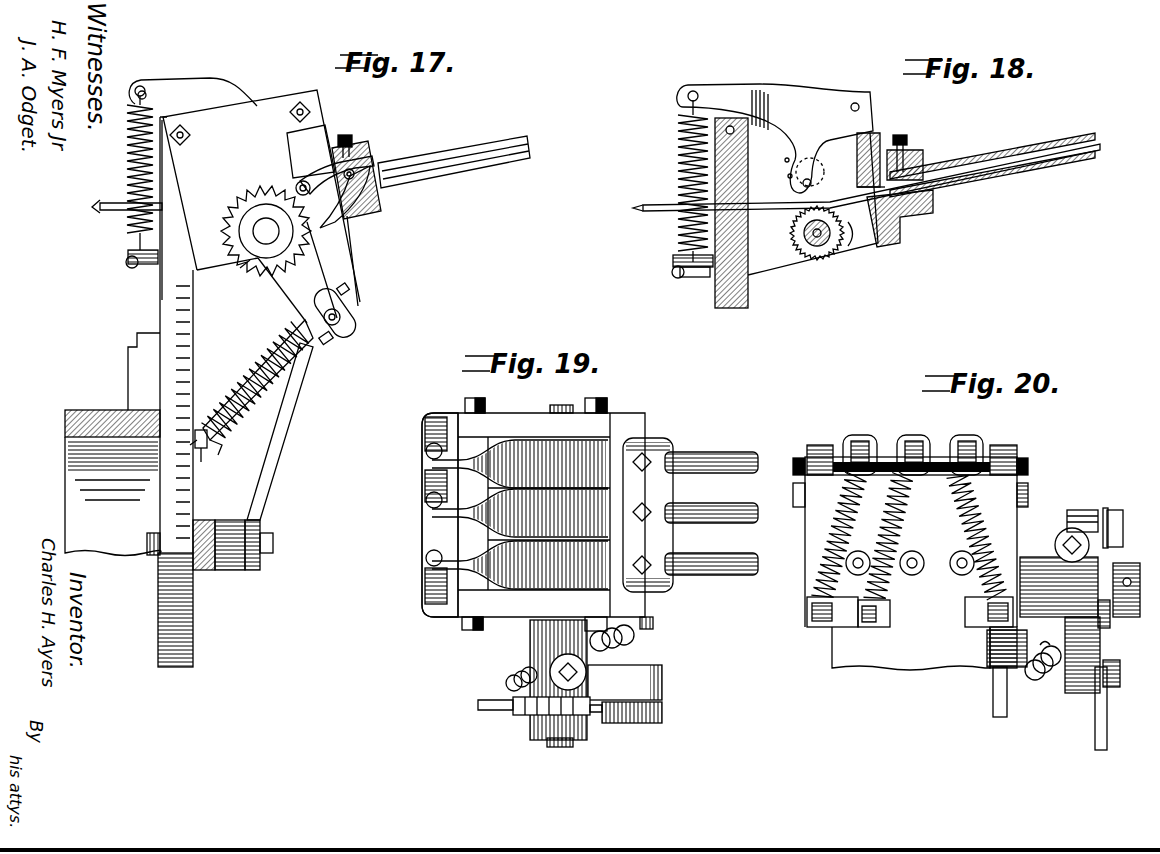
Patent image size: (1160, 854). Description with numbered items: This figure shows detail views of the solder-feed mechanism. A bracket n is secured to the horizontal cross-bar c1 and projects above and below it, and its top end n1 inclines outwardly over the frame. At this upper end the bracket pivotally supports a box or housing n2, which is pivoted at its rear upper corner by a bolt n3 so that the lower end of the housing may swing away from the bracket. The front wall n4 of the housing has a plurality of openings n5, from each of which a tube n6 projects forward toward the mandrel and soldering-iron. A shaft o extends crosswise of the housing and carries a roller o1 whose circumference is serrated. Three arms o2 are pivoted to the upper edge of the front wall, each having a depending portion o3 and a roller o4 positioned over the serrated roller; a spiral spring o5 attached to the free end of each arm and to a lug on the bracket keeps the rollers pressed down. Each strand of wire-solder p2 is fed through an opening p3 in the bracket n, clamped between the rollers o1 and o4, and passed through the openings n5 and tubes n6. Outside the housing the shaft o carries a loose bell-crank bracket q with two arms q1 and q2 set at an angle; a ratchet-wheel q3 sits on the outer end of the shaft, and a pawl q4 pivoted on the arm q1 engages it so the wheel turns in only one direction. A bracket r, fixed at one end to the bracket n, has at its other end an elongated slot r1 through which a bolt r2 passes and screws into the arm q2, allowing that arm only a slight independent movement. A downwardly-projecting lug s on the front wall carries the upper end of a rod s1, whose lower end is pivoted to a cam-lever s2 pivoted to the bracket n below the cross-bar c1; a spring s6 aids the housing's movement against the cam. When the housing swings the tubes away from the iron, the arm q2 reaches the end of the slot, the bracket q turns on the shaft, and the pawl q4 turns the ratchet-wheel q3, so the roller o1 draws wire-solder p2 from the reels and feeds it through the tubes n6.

In FIG. 17, the bracket n is at (180, 366).
In FIG. 18, the bracket n is at (746, 302).
In FIG. 19, the bracket n is at (465, 536).
In FIG. 17, the top end of bracket n1 is at (173, 289).
In FIG. 20, the top end of bracket n1 is at (911, 563).
In FIG. 17, the box or housing n2 is at (261, 196).
In FIG. 18, the box or housing n2 is at (835, 204).
In FIG. 19, the box or housing n2 is at (533, 514).
In FIG. 20, the box or housing n2 is at (820, 450).
In FIG. 17, the bolt n3 is at (190, 134).
In FIG. 18, the bolt n3 is at (730, 126).
In FIG. 19, the bolt n3 is at (465, 630).
In FIG. 20, the bolt n3 is at (1028, 489).
In FIG. 17, the front wall of housing n4 is at (330, 229).
In FIG. 18, the front wall of housing n4 is at (902, 235).
In FIG. 19, the front wall of housing n4 is at (623, 429).
In FIG. 18, the openings n5 is at (865, 187).
In FIG. 17, the tube n6 is at (473, 154).
In FIG. 18, the tube n6 is at (1000, 153).
In FIG. 19, the tube n6 is at (718, 460).
In FIG. 17, the shaft o is at (262, 233).
In FIG. 18, the shaft o is at (820, 262).
In FIG. 19, the shaft o is at (550, 408).
In FIG. 20, the shaft o is at (800, 594).
In FIG. 18, the roller o1 is at (830, 256).
In FIG. 17, the arms o2 is at (219, 97).
In FIG. 18, the arms o2 is at (775, 138).
In FIG. 19, the arms o2 is at (520, 514).
In FIG. 20, the arms o2 is at (918, 440).
In FIG. 18, the depending portion o3 is at (787, 161).
In FIG. 18, the roller o4 is at (773, 190).
In FIG. 17, the spiral spring o5 is at (128, 158).
In FIG. 18, the spiral spring o5 is at (680, 151).
In FIG. 19, the spiral spring o5 is at (422, 433).
In FIG. 20, the spiral spring o5 is at (823, 531).
In FIG. 17, the wire-solder p2 is at (106, 213).
In FIG. 18, the wire-solder p2 is at (647, 208).
In FIG. 18, the opening p3 is at (717, 203).
In FIG. 20, the opening p3 is at (913, 552).
In FIG. 19, the bell-crank bracket q is at (532, 644).
In FIG. 20, the bell-crank bracket q is at (1035, 570).
In FIG. 17, the arm q1 is at (327, 185).
In FIG. 19, the arm q1 is at (630, 678).
In FIG. 20, the arm q1 is at (1085, 520).
In FIG. 17, the arm q2 is at (292, 300).
In FIG. 20, the arm q2 is at (1080, 690).
In FIG. 17, the ratchet-wheel q3 is at (240, 268).
In FIG. 19, the ratchet-wheel q3 is at (525, 713).
In FIG. 20, the ratchet-wheel q3 is at (1108, 618).
In FIG. 17, the pawl q4 is at (372, 156).
In FIG. 19, the pawl q4 is at (645, 720).
In FIG. 20, the pawl q4 is at (1116, 518).
In FIG. 17, the bracket r is at (258, 379).
In FIG. 19, the bracket r is at (478, 705).
In FIG. 20, the bracket r is at (1098, 735).
In FIG. 17, the elongated slot r1 is at (350, 321).
In FIG. 17, the bolt r2 is at (334, 337).
In FIG. 20, the bolt r2 is at (1113, 688).
In FIG. 17, the lug or arm s is at (336, 266).
In FIG. 19, the lug or arm s is at (655, 622).
In FIG. 20, the lug or arm s is at (1015, 665).
In FIG. 17, the rod s1 is at (290, 434).
In FIG. 20, the rod s1 is at (1000, 692).
In FIG. 17, the cam-lever s2 is at (230, 566).
In FIG. 17, the spring s6 is at (282, 351).
In FIG. 19, the spring s6 is at (506, 681).
In FIG. 20, the spring s6 is at (1047, 690).
In FIG. 17, the cross-bar c1 is at (80, 427).